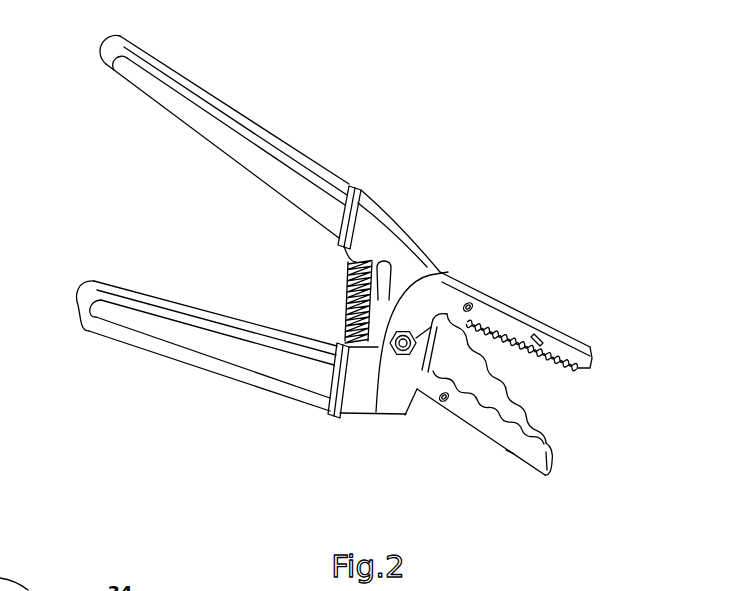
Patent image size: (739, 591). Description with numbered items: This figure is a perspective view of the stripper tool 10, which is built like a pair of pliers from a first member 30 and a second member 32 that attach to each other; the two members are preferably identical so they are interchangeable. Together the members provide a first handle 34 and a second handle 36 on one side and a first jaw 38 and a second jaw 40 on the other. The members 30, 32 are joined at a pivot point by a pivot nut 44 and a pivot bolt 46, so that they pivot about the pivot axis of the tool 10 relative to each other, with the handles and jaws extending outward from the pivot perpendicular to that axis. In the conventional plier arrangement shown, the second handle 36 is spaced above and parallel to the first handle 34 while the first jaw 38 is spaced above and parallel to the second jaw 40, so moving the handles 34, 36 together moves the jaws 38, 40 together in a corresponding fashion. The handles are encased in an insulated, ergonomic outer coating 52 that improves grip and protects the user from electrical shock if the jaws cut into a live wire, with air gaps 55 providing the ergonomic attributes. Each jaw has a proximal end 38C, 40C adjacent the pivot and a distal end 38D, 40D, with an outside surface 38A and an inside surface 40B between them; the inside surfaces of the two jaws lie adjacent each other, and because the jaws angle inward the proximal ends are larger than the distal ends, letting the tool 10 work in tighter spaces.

The stripper tool 10 is at (408, 168).
The first member 30 is at (267, 148).
The second member 32 is at (232, 363).
The first handle 34 is at (313, 166).
The second handle 36 is at (132, 323).
The first jaw 38 is at (497, 310).
The outside surface 38A is at (523, 320).
The proximal end 38C is at (455, 287).
The distal end 38D is at (575, 368).
The second jaw 40 is at (485, 437).
The inside surface 40B is at (510, 452).
The proximal end 40C is at (430, 400).
The distal end 40D is at (538, 480).
The pivot nut 44 is at (394, 355).
The pivot bolt 46 is at (412, 323).
The outer coating 52 is at (233, 108).
The air gaps 55 is at (356, 188).